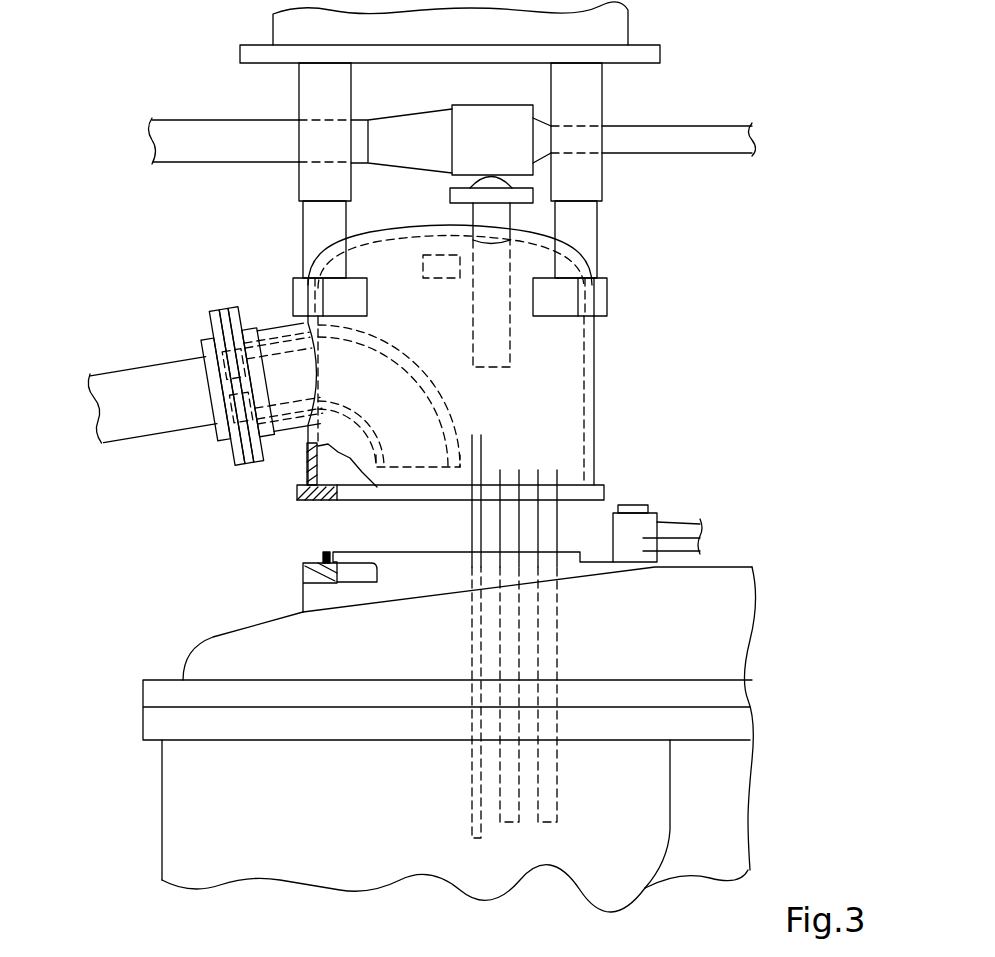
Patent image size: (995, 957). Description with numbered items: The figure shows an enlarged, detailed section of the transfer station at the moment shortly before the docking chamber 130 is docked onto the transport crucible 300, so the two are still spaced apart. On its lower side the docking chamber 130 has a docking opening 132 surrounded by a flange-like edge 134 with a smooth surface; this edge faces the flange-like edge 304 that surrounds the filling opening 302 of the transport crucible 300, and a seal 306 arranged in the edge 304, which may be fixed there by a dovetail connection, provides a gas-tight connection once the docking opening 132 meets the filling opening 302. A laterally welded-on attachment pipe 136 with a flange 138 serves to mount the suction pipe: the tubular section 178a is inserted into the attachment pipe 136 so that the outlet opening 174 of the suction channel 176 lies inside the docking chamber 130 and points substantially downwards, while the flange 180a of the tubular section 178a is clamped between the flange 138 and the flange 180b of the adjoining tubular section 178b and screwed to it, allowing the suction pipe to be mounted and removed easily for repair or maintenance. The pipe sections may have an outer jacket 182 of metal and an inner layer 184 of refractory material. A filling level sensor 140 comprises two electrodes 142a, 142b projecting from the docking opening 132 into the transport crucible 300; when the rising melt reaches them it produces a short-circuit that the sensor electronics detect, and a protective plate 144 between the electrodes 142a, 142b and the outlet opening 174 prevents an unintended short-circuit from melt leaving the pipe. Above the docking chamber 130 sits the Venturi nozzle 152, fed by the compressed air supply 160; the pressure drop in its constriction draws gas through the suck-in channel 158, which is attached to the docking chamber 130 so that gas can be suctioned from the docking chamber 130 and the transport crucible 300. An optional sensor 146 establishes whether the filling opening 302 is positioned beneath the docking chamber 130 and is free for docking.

The docking chamber 130 is at (567, 392).
The docking opening 132 is at (350, 495).
The flange-like edge 134 is at (305, 498).
The attachment pipe 136 is at (287, 323).
The flange 138 is at (181, 367).
The filling level sensor 140 is at (583, 844).
The electrode 142a is at (506, 812).
The electrode 142b is at (552, 812).
The protective plate 144 is at (472, 795).
The sensor 146 is at (437, 268).
The Venturi nozzle 152 is at (512, 104).
The suck-in channel 158 is at (500, 347).
The compressed air supply 160 is at (203, 132).
The outlet opening 174 is at (435, 470).
The suction channel 176 is at (425, 381).
The tubular section 178a is at (270, 347).
The tubular section 178b is at (107, 387).
The flange 180a is at (250, 467).
The flange 180b is at (213, 312).
The outer jacket 182 is at (443, 402).
The inner layer 184 is at (443, 427).
The transport crucible 300 is at (152, 639).
The filling opening 302 is at (350, 575).
The flange-like edge 304 is at (310, 553).
The seal 306 is at (327, 552).